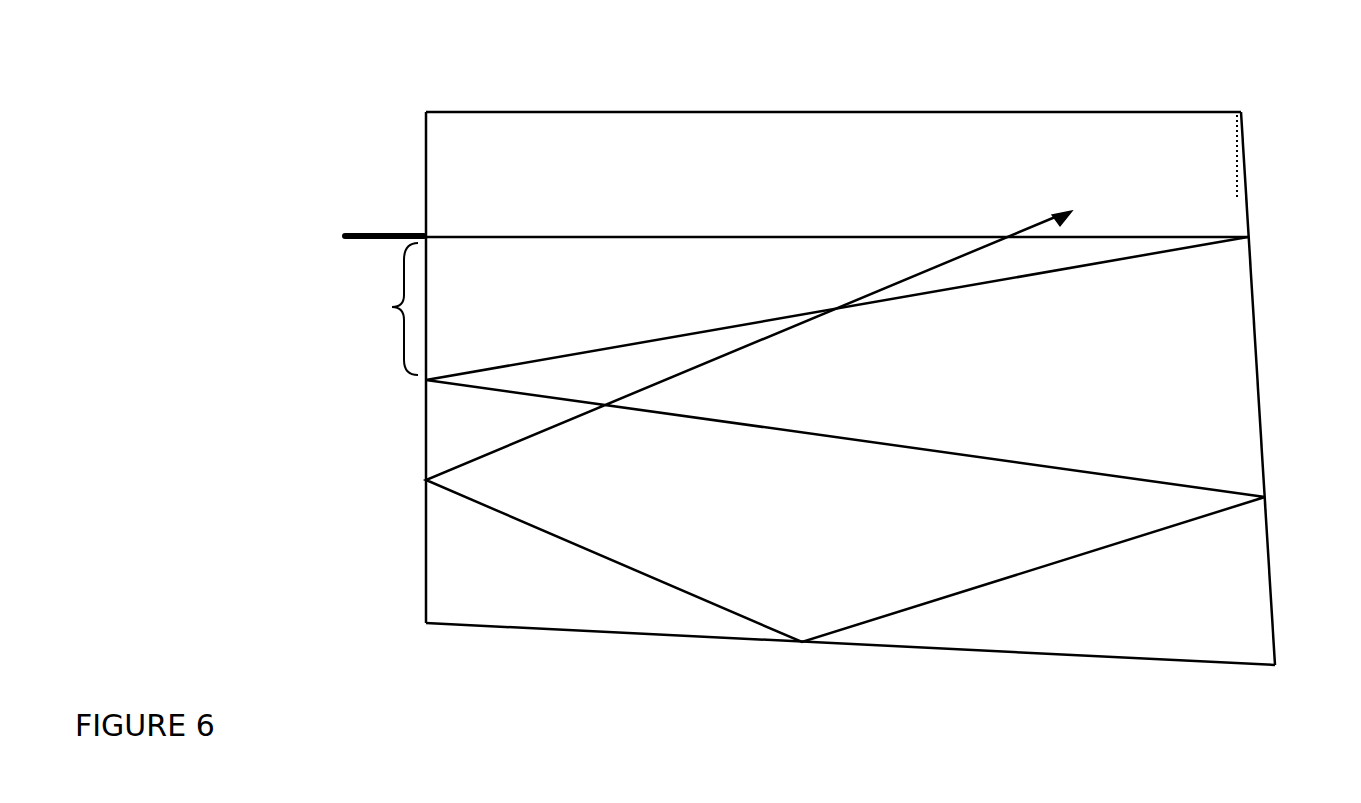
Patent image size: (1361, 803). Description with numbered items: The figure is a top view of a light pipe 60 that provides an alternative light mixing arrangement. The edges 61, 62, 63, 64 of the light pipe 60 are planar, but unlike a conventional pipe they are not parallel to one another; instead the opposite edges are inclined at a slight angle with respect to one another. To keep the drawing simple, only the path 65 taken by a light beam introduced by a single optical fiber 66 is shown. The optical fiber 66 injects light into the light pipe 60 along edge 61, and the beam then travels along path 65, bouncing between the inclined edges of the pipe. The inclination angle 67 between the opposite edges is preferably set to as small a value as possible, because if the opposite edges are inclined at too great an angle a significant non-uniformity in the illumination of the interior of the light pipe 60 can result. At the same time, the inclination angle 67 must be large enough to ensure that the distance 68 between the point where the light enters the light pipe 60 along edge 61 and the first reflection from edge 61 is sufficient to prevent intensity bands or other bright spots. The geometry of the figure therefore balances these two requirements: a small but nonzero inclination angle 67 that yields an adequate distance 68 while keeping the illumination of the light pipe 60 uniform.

The light pipe 60 is at (1104, 448).
The edge 61 is at (425, 535).
The edge 62 is at (1253, 322).
The edge 63 is at (560, 632).
The edge 64 is at (725, 110).
The path 65 is at (597, 237).
The optical fiber 66 is at (382, 232).
The inclination angle 67 is at (1239, 192).
The distance 68 is at (379, 309).